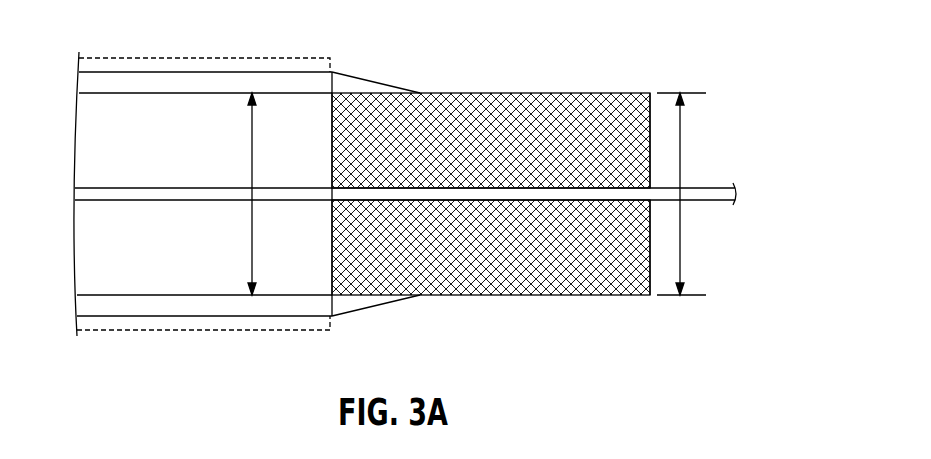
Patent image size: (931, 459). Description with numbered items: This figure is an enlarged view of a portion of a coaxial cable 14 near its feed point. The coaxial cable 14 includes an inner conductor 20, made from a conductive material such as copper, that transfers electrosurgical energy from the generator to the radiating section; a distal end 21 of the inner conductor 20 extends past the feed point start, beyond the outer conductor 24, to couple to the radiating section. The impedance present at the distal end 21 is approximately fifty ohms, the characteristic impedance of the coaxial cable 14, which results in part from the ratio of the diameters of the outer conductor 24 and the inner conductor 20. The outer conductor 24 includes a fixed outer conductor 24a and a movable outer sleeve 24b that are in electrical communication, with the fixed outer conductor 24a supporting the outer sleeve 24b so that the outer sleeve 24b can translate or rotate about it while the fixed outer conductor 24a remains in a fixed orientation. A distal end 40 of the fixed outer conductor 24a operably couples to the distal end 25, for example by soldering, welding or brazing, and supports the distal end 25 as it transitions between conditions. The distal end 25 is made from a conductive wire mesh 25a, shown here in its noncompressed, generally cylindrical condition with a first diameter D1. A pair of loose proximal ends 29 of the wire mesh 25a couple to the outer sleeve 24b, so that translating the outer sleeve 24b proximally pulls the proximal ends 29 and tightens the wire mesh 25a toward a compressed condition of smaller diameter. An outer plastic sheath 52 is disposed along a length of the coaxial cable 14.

The coaxial cable 14 is at (412, 178).
The inner conductor 20 is at (658, 193).
The distal end of the inner conductor 21 is at (726, 202).
The outer conductor 24 is at (179, 181).
The fixed outer conductor 24a is at (128, 93).
The outer sleeve 24b is at (128, 72).
The distal end 25 is at (519, 172).
The wire mesh 25a is at (622, 105).
The loose proximal ends 29 is at (360, 74).
The distal end of the fixed outer conductor 40 is at (376, 182).
The sheath 52 is at (237, 58).